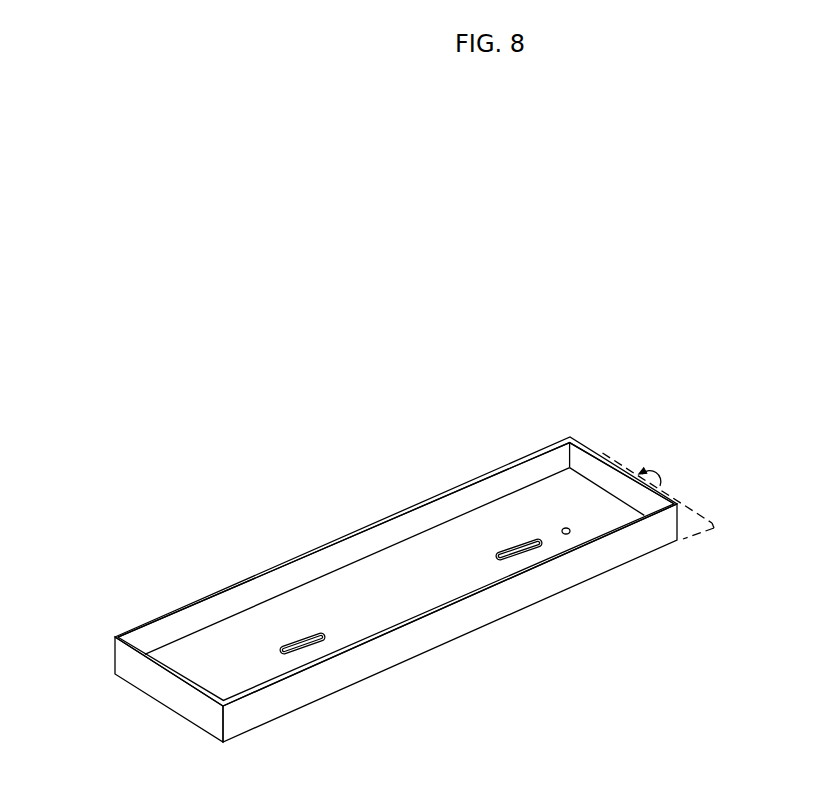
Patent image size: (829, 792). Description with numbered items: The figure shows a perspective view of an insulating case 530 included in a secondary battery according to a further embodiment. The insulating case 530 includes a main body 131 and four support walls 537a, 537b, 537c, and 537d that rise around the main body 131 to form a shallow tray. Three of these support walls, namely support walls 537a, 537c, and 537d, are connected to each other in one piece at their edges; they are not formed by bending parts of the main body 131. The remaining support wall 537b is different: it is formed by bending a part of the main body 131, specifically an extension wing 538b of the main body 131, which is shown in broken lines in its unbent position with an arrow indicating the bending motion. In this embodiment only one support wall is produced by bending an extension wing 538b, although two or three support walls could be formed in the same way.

The insulating case 530 is at (400, 575).
The support wall 537a is at (460, 623).
The support wall 537b is at (590, 452).
The support wall 537c is at (250, 593).
The support wall 537d is at (172, 697).
The main body 131 is at (340, 587).
The extension wing 538b is at (703, 515).